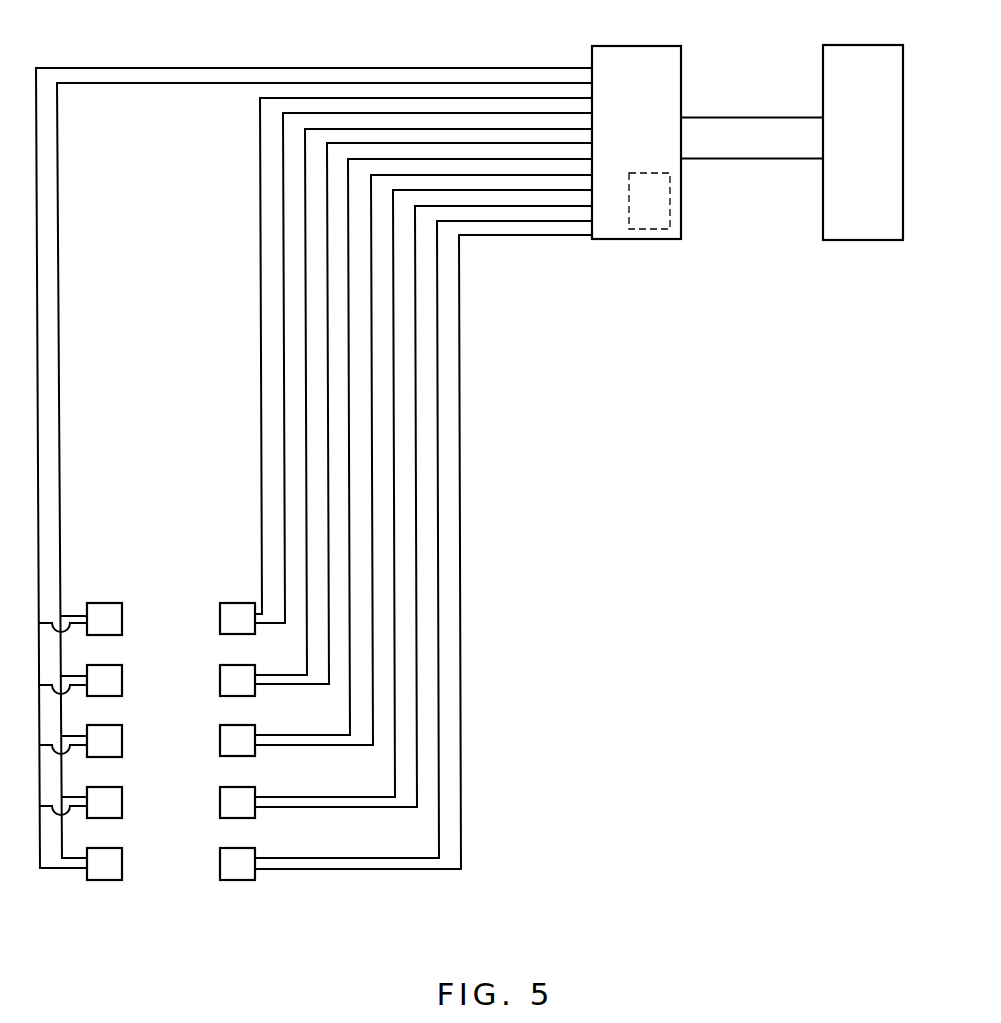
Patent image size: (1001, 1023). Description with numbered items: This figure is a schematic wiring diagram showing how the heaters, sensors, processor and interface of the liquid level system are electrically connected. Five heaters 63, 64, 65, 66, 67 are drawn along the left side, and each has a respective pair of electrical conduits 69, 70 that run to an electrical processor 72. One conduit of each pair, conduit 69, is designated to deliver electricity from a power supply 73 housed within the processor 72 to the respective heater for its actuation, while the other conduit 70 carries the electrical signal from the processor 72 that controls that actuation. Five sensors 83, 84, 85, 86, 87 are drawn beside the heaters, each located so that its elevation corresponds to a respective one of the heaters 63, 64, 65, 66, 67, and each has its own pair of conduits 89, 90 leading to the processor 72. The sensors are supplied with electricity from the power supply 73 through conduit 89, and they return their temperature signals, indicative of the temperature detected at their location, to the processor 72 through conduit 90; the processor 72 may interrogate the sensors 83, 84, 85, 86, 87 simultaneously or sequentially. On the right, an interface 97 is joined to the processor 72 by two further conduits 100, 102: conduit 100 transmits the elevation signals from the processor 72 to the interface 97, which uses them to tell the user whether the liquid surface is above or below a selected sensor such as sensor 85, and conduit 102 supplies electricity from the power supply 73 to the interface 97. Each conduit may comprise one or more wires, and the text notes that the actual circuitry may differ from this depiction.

The heater 63 is at (102, 603).
The heater 64 is at (102, 665).
The heater 65 is at (102, 725).
The heater 66 is at (108, 787).
The heater 67 is at (108, 848).
The electrical conduit 69 is at (59, 305).
The electrical conduit 70 is at (170, 67).
The electrical processor 72 is at (636, 142).
The power supply 73 is at (649, 201).
The sensor 83 is at (219, 608).
The sensor 84 is at (219, 669).
The sensor 85 is at (219, 731).
The sensor 86 is at (219, 805).
The sensor 87 is at (219, 865).
The electrical conduit 89 is at (285, 546).
The electrical conduit 90 is at (262, 335).
The interface 97 is at (863, 142).
The electrical conduit 100 is at (752, 116).
The electrical conduit 102 is at (750, 160).